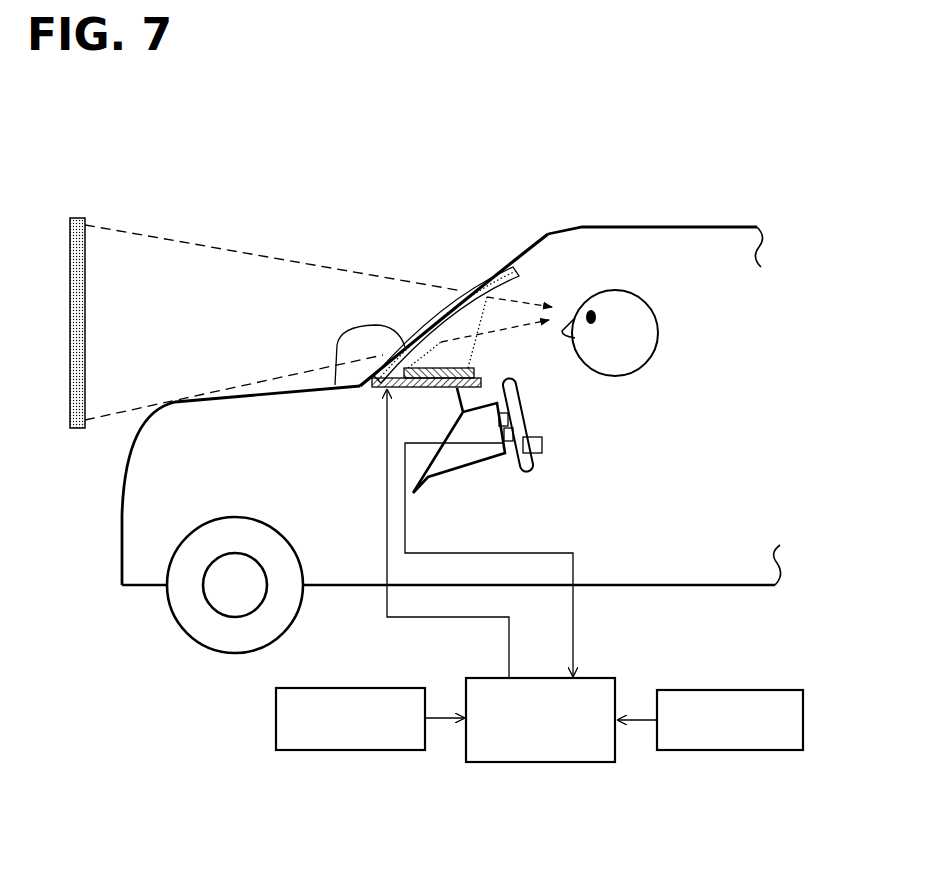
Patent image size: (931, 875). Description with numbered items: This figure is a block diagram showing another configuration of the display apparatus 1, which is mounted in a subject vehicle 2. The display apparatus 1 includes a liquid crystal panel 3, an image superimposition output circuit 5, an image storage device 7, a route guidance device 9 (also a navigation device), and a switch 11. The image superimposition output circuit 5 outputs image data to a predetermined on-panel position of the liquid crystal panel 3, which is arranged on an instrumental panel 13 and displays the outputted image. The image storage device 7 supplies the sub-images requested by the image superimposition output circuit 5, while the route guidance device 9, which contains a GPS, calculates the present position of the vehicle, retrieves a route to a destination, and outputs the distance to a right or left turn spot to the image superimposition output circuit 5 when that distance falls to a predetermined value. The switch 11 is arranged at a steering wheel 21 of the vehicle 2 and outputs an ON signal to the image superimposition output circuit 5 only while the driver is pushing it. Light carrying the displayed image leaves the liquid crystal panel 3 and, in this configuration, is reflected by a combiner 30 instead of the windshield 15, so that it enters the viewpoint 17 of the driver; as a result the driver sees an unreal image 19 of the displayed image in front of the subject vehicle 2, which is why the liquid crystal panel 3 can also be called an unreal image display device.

The display apparatus 1 is at (730, 186).
The subject vehicle 2 is at (620, 227).
The liquid crystal panel 3 is at (338, 387).
The image superimposition output circuit 5 is at (508, 763).
The image storage device 7 is at (330, 752).
The route guidance device 9 is at (705, 752).
The switch 11 is at (543, 450).
The instrumental panel 13 is at (481, 378).
The windshield 15 is at (492, 270).
The viewpoint 17 is at (603, 333).
The unreal image 19 is at (94, 256).
The steering wheel 21 is at (519, 402).
The combiner 30 is at (518, 268).